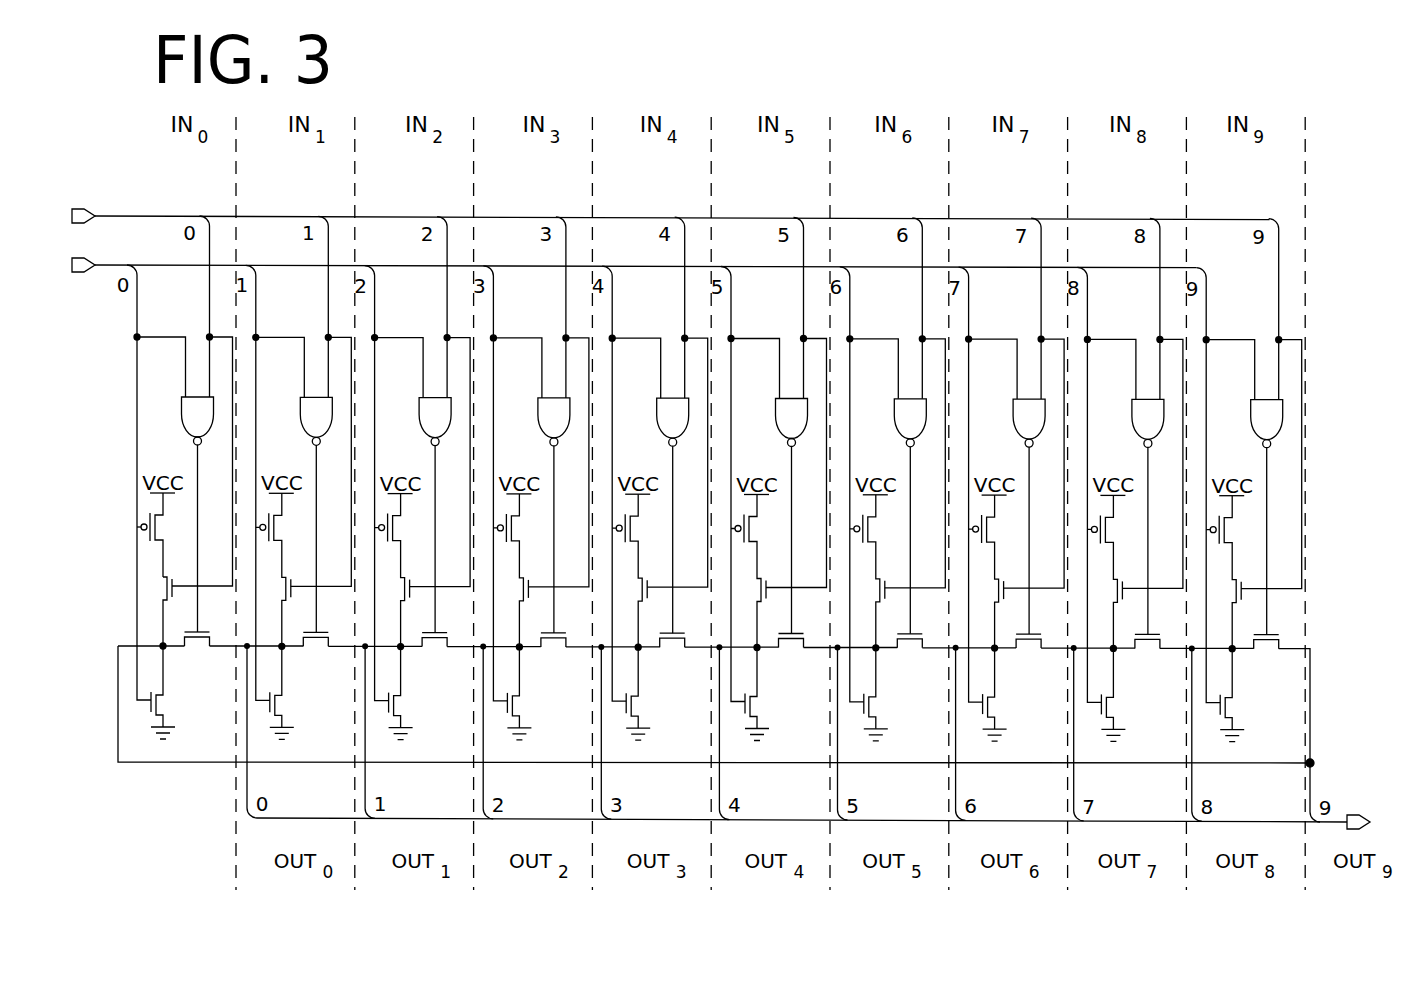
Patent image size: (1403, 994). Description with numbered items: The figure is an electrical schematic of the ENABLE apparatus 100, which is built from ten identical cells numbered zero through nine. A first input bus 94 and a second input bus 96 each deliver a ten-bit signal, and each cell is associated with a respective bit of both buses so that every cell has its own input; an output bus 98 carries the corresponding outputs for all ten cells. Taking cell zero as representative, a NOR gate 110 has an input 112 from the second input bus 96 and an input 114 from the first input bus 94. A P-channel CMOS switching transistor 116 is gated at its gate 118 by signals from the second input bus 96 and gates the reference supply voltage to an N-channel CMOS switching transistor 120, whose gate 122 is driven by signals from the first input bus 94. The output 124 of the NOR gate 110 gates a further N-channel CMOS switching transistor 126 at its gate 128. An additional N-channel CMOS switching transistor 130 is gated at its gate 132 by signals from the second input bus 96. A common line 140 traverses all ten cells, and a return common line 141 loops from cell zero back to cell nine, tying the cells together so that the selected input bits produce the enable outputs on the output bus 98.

The first input bus 94 is at (88, 212).
The second input bus 96 is at (84, 272).
The output bus 98 is at (1332, 821).
The ENABLE apparatus 100 is at (1324, 330).
The NOR gate 110 is at (181, 410).
The input 112 is at (186, 370).
The input 114 is at (208, 353).
The P-channel CMOS switching transistor 116 is at (150, 538).
The gate 118 is at (141, 527).
The N-channel CMOS switching transistor 120 is at (165, 590).
The gate 122 is at (175, 586).
The output 124 is at (197, 455).
The N-channel CMOS switching transistor 126 is at (186, 648).
The gate 128 is at (199, 628).
The N-channel CMOS switching transistor 130 is at (153, 708).
The gate 132 is at (140, 703).
The common line 140 is at (118, 646).
The return common line 141 is at (163, 763).